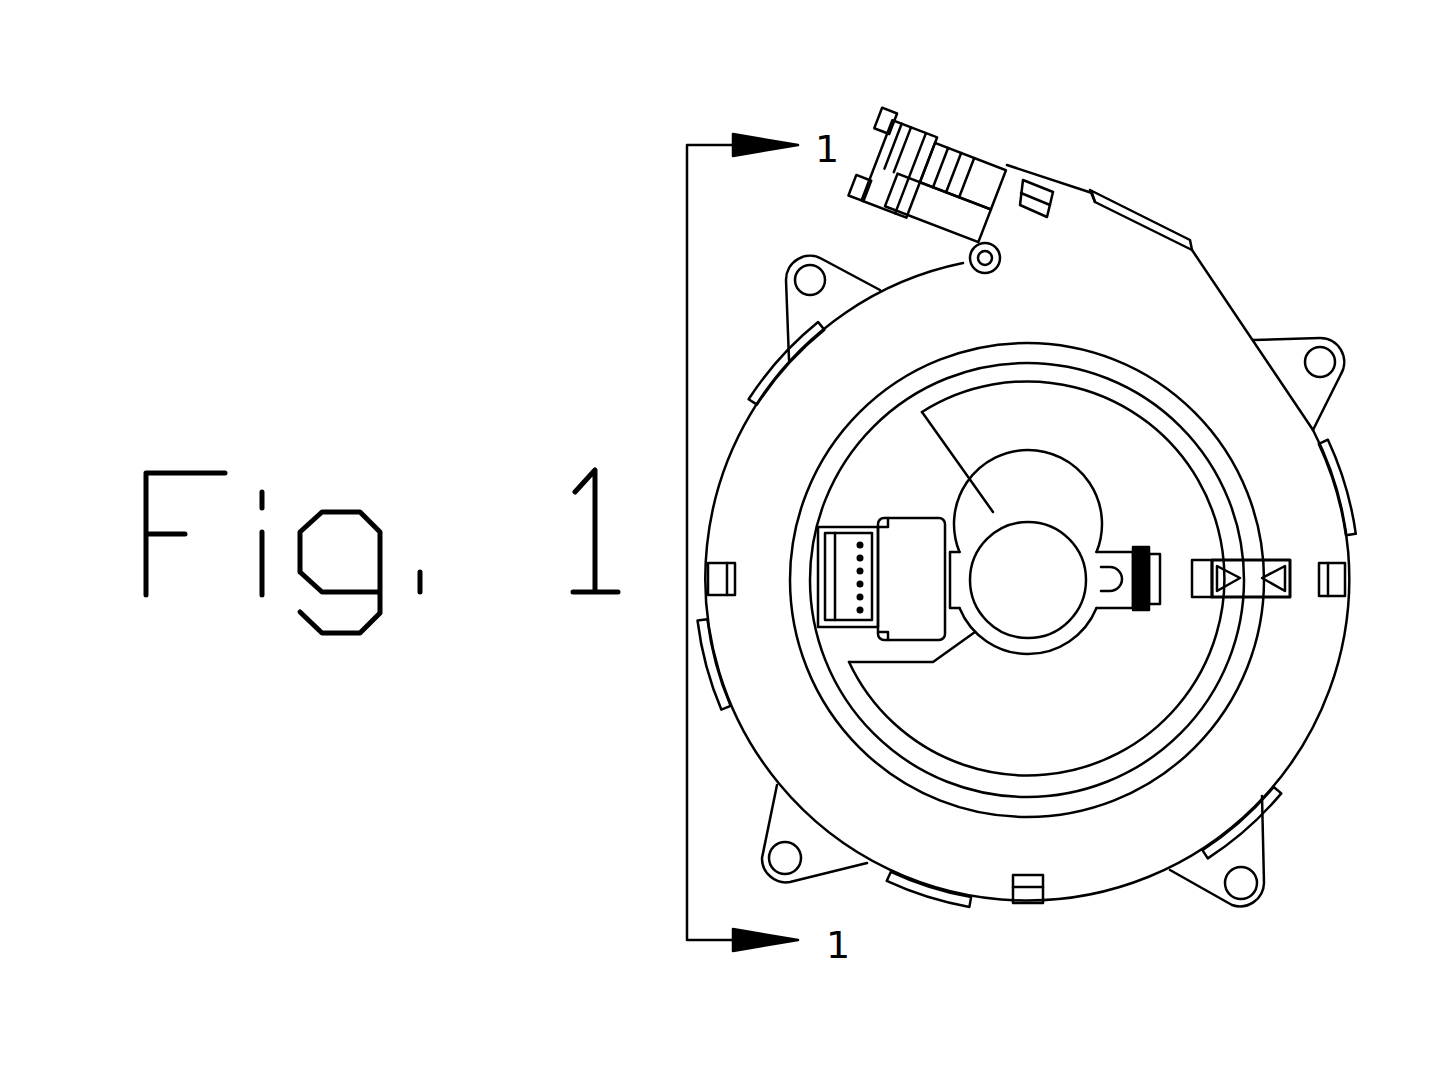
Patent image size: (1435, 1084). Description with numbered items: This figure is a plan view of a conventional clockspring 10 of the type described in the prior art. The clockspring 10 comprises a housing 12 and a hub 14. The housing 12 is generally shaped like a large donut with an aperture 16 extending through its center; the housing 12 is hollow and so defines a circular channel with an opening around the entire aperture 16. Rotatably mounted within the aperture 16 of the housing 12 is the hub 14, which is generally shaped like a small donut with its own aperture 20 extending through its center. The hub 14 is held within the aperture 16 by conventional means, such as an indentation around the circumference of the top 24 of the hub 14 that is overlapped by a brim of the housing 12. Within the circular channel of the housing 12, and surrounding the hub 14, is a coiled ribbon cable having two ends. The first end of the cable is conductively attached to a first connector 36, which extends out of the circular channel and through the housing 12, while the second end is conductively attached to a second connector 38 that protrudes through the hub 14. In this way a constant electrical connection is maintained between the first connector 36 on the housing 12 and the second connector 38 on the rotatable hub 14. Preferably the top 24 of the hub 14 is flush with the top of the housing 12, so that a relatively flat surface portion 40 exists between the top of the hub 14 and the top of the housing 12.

The clockspring 10 is at (1123, 112).
The housing 12 is at (1274, 698).
The hub 14 is at (1122, 707).
The aperture 16 is at (917, 800).
The aperture 20 is at (1002, 635).
The top 24 is at (1145, 490).
The first connector 36 is at (880, 170).
The second connector 38 is at (845, 543).
The flat surface portion 40 is at (1170, 352).